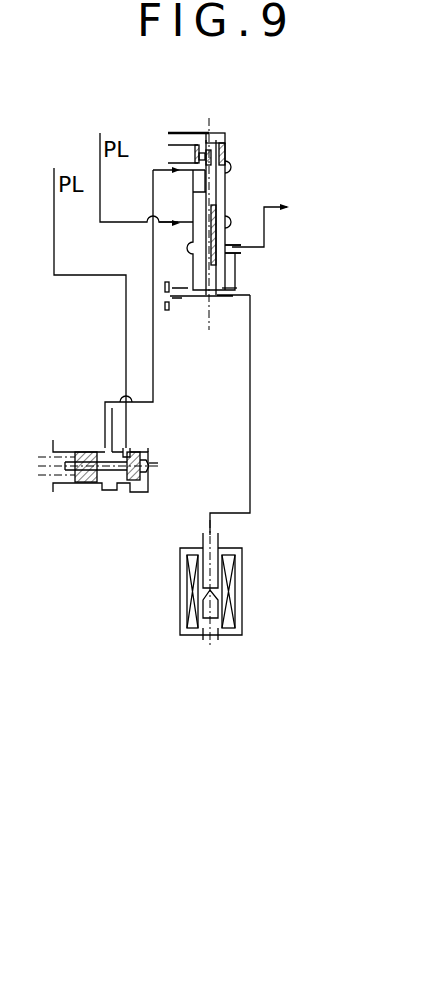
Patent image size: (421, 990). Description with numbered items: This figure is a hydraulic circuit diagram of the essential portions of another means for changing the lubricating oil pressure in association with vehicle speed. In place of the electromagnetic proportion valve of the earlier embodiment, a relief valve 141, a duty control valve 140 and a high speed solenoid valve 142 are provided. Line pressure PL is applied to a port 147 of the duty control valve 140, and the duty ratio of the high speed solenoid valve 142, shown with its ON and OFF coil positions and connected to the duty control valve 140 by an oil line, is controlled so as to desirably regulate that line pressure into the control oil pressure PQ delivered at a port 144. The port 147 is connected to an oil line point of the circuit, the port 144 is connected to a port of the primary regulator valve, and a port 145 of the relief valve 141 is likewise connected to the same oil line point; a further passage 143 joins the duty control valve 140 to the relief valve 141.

The duty control valve 140 is at (243, 149).
The relief valve 141 is at (79, 502).
The high speed solenoid valve 142 is at (249, 611).
The fluid passage 143 is at (163, 172).
The port 144 is at (236, 253).
The port 145 is at (124, 436).
The port 147 is at (167, 224).